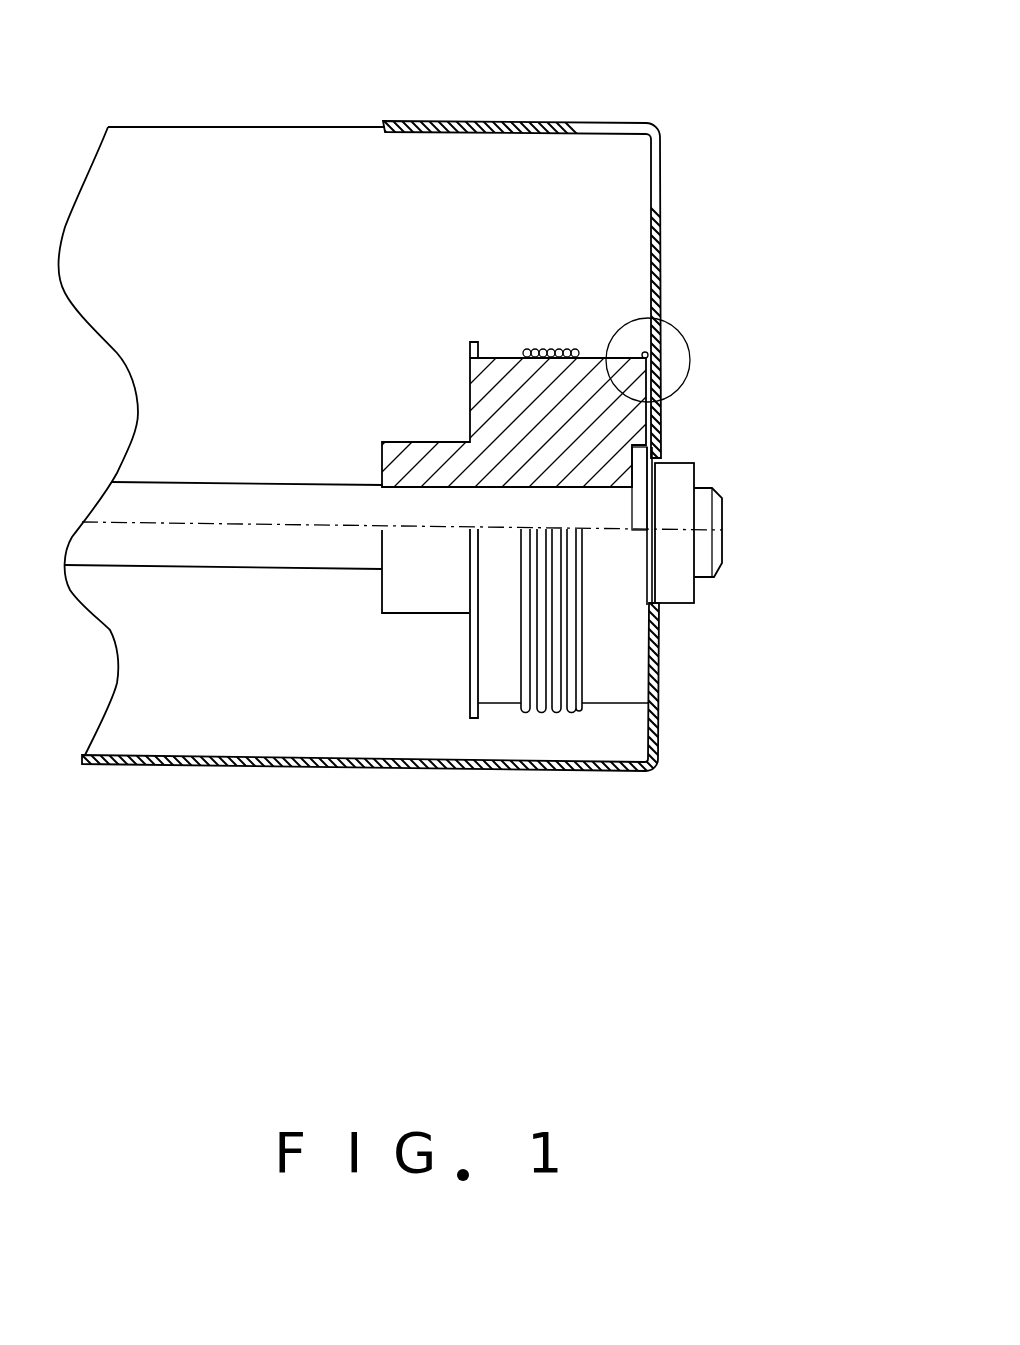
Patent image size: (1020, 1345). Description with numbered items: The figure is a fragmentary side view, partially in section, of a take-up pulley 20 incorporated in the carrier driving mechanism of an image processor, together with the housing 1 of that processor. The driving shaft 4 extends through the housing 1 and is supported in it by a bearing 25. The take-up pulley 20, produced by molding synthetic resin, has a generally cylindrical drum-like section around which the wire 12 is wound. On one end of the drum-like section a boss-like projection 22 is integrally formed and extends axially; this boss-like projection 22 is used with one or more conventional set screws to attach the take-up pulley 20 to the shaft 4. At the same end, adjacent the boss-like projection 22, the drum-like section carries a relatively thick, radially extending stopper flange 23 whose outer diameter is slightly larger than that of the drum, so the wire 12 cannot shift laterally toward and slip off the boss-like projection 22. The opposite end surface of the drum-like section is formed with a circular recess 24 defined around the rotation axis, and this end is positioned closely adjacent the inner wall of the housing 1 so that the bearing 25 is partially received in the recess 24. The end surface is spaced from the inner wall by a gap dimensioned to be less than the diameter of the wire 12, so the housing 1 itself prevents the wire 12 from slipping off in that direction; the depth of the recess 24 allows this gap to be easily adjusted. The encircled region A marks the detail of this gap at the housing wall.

The housing 1 is at (432, 121).
The driving shaft 4 is at (285, 495).
The take-up pulley 20 is at (445, 368).
The boss-like projection 22 is at (405, 585).
The stopper flange 23 is at (472, 716).
The wire 12 is at (542, 710).
The recess 24 is at (645, 452).
The bearing 25 is at (677, 572).
The detail region A is at (702, 322).